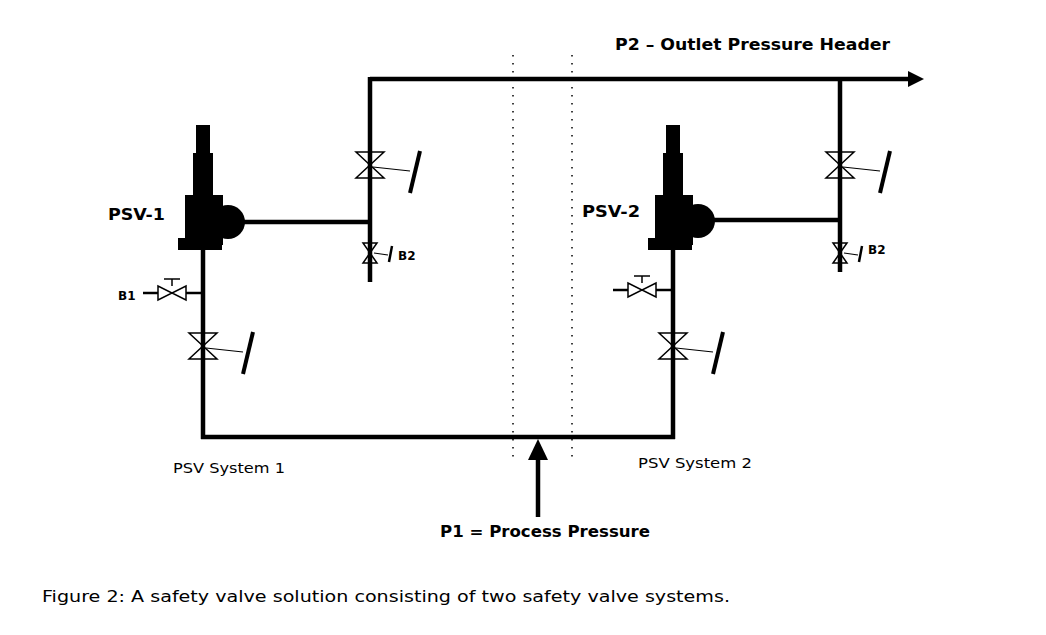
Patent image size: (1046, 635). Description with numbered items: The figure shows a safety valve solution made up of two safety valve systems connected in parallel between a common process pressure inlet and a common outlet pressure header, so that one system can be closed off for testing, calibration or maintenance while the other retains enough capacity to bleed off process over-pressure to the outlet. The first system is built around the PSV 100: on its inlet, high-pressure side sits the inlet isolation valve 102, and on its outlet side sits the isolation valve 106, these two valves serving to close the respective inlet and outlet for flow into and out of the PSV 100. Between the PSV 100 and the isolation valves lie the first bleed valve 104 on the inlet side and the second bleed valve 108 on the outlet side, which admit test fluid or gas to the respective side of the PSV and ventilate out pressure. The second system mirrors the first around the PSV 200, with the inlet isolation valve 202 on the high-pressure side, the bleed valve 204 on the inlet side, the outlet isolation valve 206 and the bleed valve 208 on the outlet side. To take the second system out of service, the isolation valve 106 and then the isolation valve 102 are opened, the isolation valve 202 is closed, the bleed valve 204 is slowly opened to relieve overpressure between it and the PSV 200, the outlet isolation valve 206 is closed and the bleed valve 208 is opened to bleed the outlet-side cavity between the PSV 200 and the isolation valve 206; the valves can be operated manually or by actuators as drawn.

The PSV 100 is at (211, 169).
The P1 isolation valve 102 is at (250, 353).
The first bleed valve 104 is at (131, 291).
The isolation valve 106 is at (413, 172).
The second bleed valve 108 is at (417, 254).
The PSV 200 is at (681, 172).
The P1 isolation valve 202 is at (720, 353).
The bleed valve 204 is at (618, 289).
The outlet isolation valve 206 is at (890, 172).
The bleed valve 208 is at (896, 255).